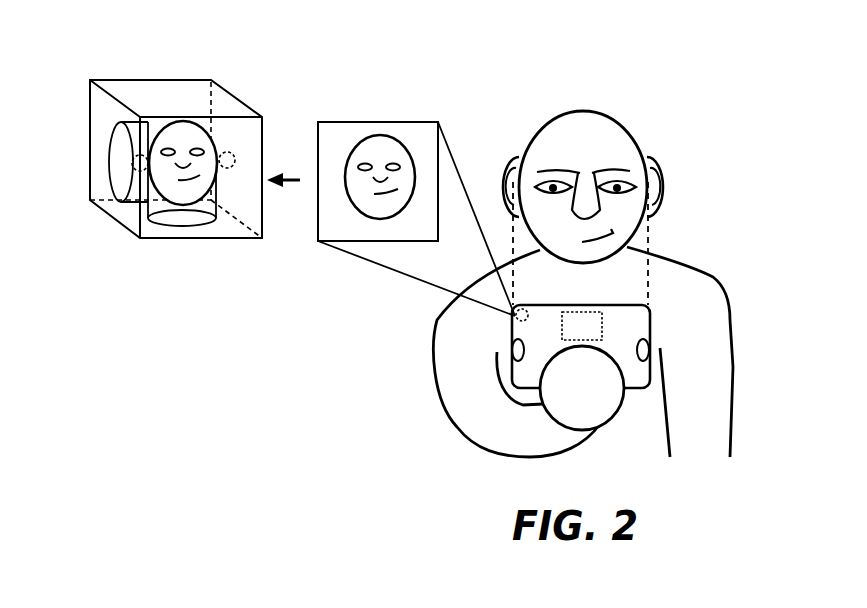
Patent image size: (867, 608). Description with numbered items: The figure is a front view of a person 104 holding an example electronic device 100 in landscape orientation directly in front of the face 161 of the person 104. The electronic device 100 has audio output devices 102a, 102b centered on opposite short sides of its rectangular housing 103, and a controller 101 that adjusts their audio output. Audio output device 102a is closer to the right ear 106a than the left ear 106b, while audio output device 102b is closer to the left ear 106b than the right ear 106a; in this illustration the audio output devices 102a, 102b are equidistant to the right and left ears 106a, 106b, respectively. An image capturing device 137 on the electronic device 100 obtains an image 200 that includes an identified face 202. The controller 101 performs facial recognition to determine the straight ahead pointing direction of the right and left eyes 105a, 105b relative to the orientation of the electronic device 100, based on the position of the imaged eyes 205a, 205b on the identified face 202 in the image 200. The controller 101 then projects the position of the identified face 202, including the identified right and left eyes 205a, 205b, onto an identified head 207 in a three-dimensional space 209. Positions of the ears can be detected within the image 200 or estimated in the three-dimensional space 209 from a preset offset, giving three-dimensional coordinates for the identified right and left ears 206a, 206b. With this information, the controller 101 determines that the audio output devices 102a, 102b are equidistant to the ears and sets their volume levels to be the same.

The electronic device 100 is at (648, 390).
The controller 101 is at (582, 326).
The audio output device 102a is at (512, 347).
The audio output device 102b is at (651, 343).
The housing 103 is at (637, 392).
The person 104 is at (467, 443).
The right eye 105a is at (553, 180).
The left eye 105b is at (628, 178).
The right ear 106a is at (503, 153).
The left ear 106b is at (668, 168).
The image capturing device 137 is at (515, 322).
The face 161 is at (623, 217).
The image 200 is at (378, 120).
The identified face 202 is at (405, 142).
The identified right eye 205a is at (168, 147).
The identified left eye 205b is at (195, 147).
The identified right ear 206a is at (138, 157).
The identified left ear 206b is at (234, 158).
The identified head 207 is at (198, 147).
The three-dimensional space 209 is at (237, 97).